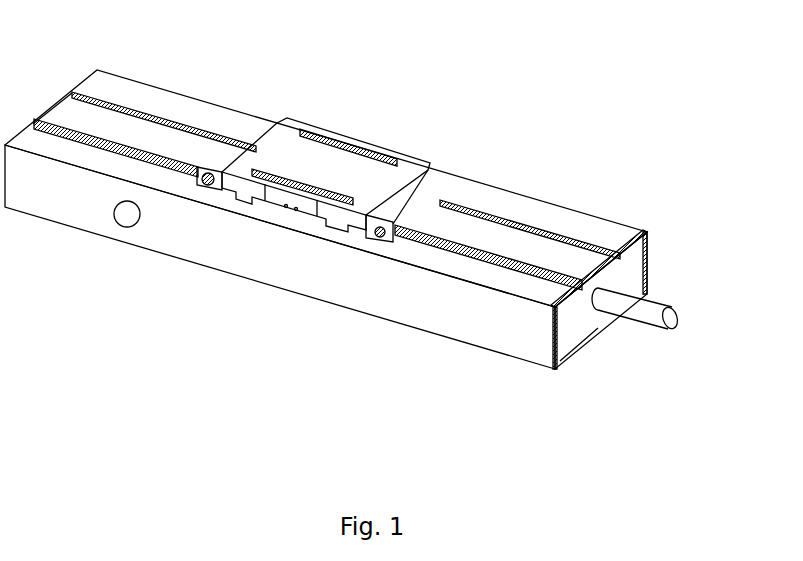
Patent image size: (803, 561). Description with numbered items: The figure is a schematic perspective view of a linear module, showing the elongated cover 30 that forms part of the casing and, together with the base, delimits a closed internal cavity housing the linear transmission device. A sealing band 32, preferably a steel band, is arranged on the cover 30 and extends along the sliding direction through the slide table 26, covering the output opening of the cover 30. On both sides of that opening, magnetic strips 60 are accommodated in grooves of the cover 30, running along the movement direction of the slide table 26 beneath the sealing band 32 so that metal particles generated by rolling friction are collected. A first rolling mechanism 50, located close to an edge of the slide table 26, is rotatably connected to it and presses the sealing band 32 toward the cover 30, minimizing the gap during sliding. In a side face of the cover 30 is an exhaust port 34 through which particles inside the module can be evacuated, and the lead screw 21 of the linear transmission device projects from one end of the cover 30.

The cover 30 is at (62, 100).
The sealing band 32 is at (82, 110).
The magnetic strips 60 is at (183, 127).
The slide table 26 is at (290, 136).
The first rolling mechanism 50 is at (206, 186).
The exhaust port 34 is at (127, 214).
The lead screw 21 is at (645, 303).